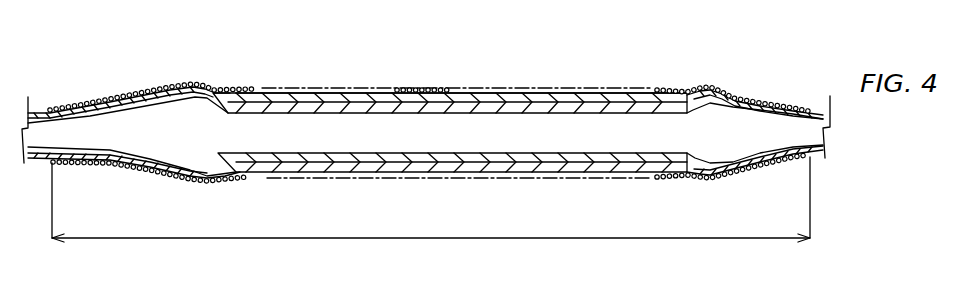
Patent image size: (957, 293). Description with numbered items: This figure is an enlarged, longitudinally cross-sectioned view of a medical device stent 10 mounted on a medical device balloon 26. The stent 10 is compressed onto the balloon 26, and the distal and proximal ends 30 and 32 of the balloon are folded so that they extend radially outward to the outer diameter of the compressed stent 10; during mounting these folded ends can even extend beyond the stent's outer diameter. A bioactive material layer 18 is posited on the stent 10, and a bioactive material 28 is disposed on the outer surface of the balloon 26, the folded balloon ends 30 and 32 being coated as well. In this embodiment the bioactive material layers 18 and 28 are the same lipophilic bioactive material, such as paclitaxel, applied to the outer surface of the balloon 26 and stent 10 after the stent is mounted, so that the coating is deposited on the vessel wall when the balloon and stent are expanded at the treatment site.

The medical device stent 10 is at (390, 94).
The bioactive material layer 18 is at (413, 87).
The medical device balloon 26 is at (597, 108).
The bioactive material 28 is at (195, 82).
The distal balloon end 30 is at (740, 82).
The proximal balloon end 32 is at (146, 84).